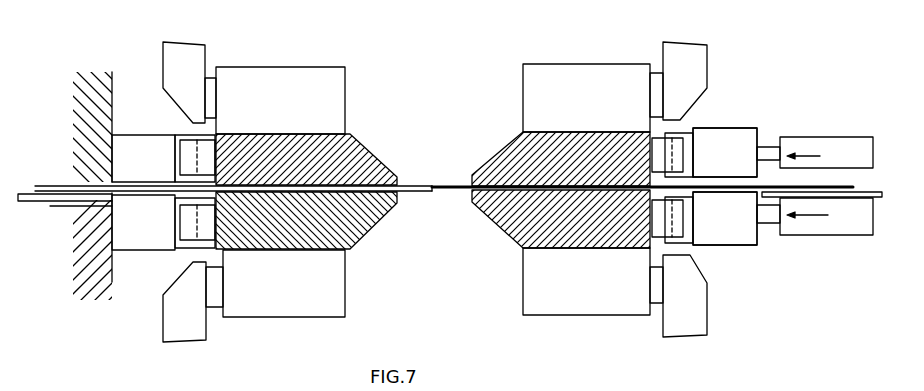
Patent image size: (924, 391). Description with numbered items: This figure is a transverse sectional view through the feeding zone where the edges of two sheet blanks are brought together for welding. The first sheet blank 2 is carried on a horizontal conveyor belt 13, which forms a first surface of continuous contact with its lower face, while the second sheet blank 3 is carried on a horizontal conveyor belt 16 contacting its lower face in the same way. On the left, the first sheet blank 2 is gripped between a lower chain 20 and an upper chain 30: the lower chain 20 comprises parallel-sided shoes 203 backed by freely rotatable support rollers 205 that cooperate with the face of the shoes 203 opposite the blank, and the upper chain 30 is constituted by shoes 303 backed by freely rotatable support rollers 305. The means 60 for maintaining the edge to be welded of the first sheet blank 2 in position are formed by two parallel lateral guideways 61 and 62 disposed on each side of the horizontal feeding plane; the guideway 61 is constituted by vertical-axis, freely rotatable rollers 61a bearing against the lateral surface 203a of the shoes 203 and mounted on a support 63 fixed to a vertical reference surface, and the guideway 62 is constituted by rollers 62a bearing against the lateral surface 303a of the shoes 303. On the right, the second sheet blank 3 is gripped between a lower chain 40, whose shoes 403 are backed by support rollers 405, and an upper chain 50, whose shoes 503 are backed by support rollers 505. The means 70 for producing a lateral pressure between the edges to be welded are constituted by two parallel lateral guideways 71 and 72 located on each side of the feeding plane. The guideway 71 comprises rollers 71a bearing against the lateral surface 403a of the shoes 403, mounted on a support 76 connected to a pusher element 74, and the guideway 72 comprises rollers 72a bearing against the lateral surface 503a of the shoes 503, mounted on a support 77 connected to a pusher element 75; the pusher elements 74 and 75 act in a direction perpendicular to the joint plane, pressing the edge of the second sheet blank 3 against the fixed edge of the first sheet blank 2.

The first sheet blank 2 is at (417, 183).
The second sheet blank 3 is at (456, 184).
The horizontal conveyor belt 13 is at (36, 206).
The horizontal conveyor belt 16 is at (880, 200).
The lower chain 20 is at (371, 257).
The upper chain 30 is at (366, 124).
The lower chain 40 is at (488, 245).
The upper chain 50 is at (506, 122).
The means for maintaining in position the edge to be welded 60 is at (137, 78).
The lateral guideway 61 is at (124, 266).
The rollers 61a is at (190, 222).
The lateral guideway 62 is at (144, 124).
The rollers 62a is at (185, 156).
The support 63 is at (120, 232).
The means for producing a lateral pressure 70 is at (762, 72).
The lateral guideway 71 is at (767, 288).
The rollers 71a is at (680, 222).
The lateral guideway 72 is at (742, 120).
The rollers 72a is at (678, 128).
The pusher element 74 is at (835, 230).
The pusher element 75 is at (834, 150).
The support 76 is at (745, 236).
The support 77 is at (743, 145).
The shoes 203 is at (325, 232).
The lateral surface 203a is at (200, 256).
The support rollers 205 is at (278, 295).
The shoes 303 is at (334, 150).
The lateral surface 303a is at (240, 127).
The support rollers 305 is at (294, 93).
The shoes 403 is at (558, 228).
The lateral surface 403a is at (633, 255).
The support rollers 405 is at (598, 290).
The shoes 503 is at (583, 160).
The lateral surface 503a is at (631, 127).
The support rollers 505 is at (541, 88).